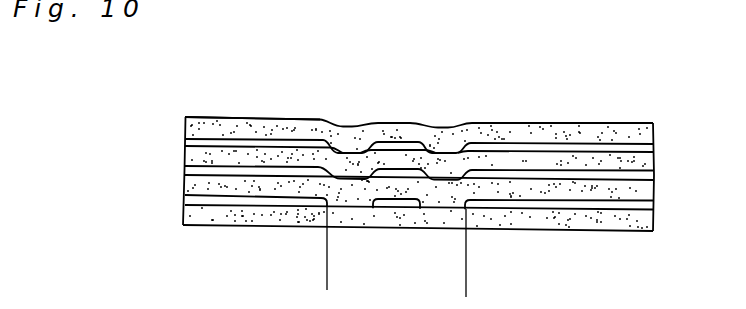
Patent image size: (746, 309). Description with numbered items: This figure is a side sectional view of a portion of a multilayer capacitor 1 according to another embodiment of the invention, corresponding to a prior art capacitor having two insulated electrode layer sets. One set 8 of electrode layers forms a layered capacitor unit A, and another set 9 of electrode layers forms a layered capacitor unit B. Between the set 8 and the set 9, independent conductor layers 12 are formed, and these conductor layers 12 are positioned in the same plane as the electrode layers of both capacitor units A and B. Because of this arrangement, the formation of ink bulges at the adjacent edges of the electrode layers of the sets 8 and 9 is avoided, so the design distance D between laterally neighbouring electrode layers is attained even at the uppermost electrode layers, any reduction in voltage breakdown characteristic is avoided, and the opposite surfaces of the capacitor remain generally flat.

The multilayer laminate (printed circuit board) 1 is at (640, 131).
The set of electrode layers 8 is at (287, 199).
The set of electrode layers 9 is at (535, 202).
The independent conductor layers 12 is at (399, 139).
The layered capacitor unit A is at (242, 112).
The layered capacitor unit B is at (590, 118).
The design distance D is at (466, 268).